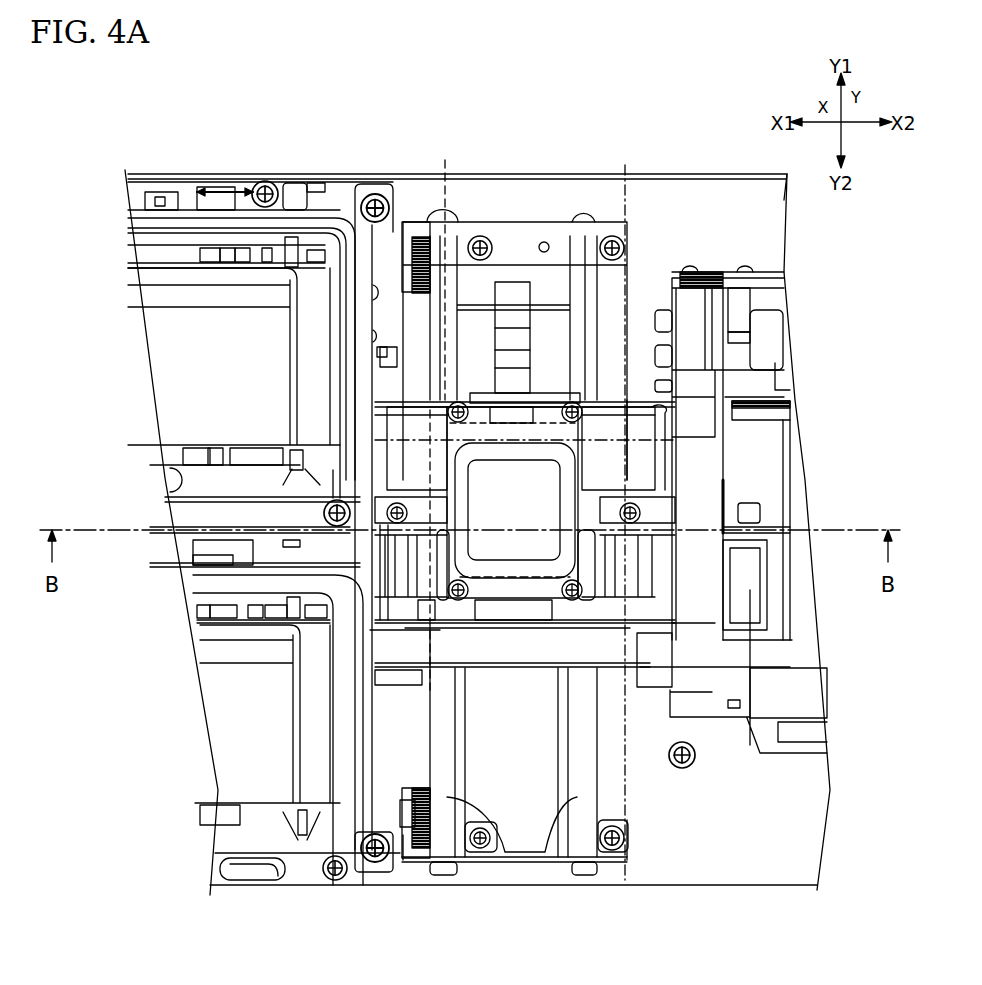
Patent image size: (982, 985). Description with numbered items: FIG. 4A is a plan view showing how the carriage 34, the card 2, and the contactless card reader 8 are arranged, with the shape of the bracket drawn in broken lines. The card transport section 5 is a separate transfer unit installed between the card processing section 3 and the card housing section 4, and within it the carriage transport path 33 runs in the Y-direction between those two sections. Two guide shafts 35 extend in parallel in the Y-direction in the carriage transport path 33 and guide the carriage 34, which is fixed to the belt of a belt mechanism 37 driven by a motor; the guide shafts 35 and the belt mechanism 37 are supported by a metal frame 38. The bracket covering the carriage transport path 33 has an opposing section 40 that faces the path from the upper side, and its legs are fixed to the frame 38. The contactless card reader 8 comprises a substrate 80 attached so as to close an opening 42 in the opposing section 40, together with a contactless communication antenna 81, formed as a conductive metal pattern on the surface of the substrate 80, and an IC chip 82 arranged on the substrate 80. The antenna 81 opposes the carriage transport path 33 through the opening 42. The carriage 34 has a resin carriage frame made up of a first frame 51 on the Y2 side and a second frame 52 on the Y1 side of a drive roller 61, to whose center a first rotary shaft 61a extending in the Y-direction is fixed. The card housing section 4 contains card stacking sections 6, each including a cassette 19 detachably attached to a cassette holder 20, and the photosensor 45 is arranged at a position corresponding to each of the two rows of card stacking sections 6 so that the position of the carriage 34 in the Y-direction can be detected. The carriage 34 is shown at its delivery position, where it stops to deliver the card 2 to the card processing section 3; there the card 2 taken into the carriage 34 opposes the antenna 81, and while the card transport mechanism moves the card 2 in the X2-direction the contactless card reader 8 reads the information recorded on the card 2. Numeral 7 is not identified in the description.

The card 2 is at (155, 332).
The card processing section 3 is at (740, 266).
The card housing section 4 is at (210, 190).
The card transport section 5 is at (487, 197).
The card stacking section 6 is at (186, 192).
The cover 7 is at (684, 186).
The contactless card reader 8 is at (513, 136).
The cassette 19 is at (233, 224).
The cassette holder 20 is at (302, 233).
The carriage transport path 33 is at (512, 212).
The carriage 34 is at (612, 392).
The guide shaft 35 is at (575, 800).
The belt mechanism 37 is at (418, 847).
The frame 38 is at (610, 862).
The opposing section 40 is at (625, 777).
The opening 42 is at (440, 411).
The photosensor 45 is at (380, 352).
The first frame 51 is at (362, 650).
The second frame 52 is at (392, 432).
The drive roller 61 is at (395, 514).
The first rotary shaft 61a is at (395, 556).
The substrate 80 is at (540, 388).
The contactless communication antenna 81 is at (591, 400).
The IC chip 82 is at (513, 412).